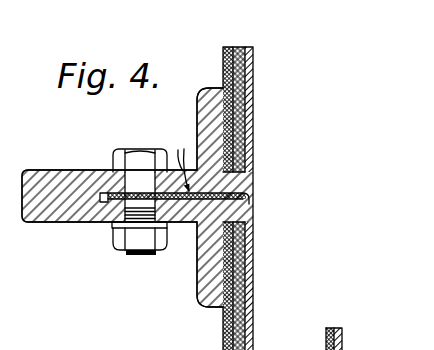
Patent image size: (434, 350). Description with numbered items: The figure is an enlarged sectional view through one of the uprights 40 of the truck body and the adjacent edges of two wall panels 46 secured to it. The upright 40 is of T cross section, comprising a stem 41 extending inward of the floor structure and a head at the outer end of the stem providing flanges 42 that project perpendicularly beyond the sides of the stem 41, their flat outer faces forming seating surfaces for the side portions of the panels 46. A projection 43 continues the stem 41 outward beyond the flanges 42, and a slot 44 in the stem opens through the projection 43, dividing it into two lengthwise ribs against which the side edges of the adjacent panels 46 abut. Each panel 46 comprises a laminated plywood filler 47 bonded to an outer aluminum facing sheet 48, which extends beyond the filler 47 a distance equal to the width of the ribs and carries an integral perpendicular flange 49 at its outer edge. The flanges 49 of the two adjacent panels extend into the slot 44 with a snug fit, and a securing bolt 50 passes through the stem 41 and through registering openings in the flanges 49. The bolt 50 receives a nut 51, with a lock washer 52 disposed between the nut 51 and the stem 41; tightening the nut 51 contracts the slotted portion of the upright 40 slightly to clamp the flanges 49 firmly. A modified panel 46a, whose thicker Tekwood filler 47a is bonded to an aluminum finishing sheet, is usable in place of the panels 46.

The upright 40 is at (50, 225).
The stem 41 is at (55, 172).
The flanges 42 is at (201, 125).
The projection 43 is at (233, 180).
The slot 44 is at (103, 203).
The panels 46 is at (256, 88).
The filler 47 is at (265, 27).
The facing sheet 48 is at (253, 68).
The flange 49 is at (181, 145).
The securing bolt 50 is at (133, 187).
The nut 51 is at (137, 242).
The lock washer 52 is at (121, 226).
The panel 46a is at (348, 348).
The filler 47a is at (356, 317).